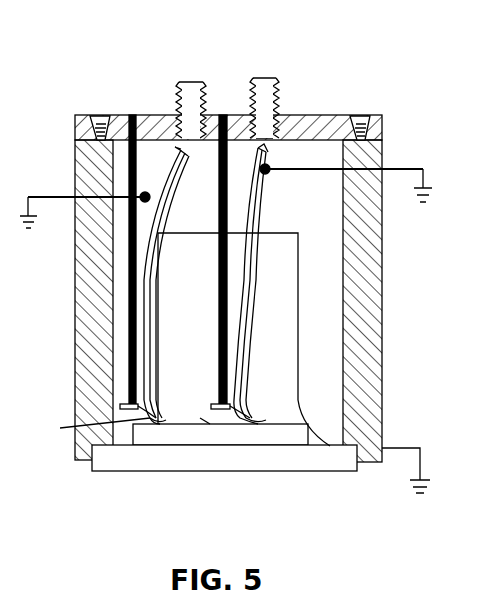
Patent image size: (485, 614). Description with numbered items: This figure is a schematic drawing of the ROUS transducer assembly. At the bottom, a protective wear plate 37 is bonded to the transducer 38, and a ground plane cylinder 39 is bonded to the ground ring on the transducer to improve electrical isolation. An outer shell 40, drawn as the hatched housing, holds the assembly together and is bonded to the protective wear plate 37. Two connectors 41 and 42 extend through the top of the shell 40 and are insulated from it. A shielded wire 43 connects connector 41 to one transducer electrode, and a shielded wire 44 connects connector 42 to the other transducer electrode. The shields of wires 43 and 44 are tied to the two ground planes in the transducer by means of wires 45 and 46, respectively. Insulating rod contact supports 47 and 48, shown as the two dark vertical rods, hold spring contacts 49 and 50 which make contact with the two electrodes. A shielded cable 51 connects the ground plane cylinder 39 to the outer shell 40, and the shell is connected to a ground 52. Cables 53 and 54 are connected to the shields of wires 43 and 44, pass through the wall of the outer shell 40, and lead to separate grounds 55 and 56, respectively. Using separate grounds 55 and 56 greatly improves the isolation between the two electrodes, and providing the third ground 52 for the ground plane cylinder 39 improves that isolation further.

The protective wear plate 37 is at (146, 471).
The transducer 38 is at (252, 440).
The ground plane cylinder 39 is at (300, 262).
The outer shell 40 is at (75, 333).
The connector 41 is at (188, 80).
The connector 42 is at (264, 77).
The shielded wire 43 is at (180, 156).
The shielded wire 44 is at (262, 172).
The wire 45 is at (160, 412).
The wire 46 is at (250, 416).
The insulating rod contact support 47 is at (132, 114).
The insulating rod contact support 48 is at (223, 114).
The spring contact 49 is at (92, 429).
The spring contact 50 is at (200, 418).
The shielded cable 51 is at (306, 410).
The ground 52 is at (410, 447).
The cable 53 is at (60, 195).
The cable 54 is at (290, 169).
The ground 55 is at (36, 214).
The ground 56 is at (430, 186).